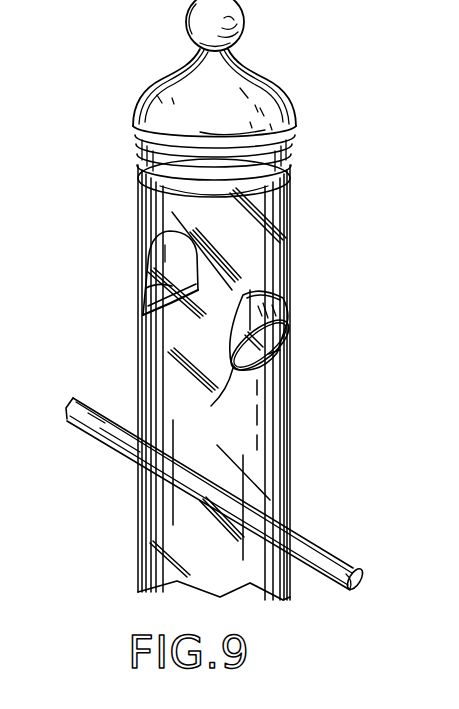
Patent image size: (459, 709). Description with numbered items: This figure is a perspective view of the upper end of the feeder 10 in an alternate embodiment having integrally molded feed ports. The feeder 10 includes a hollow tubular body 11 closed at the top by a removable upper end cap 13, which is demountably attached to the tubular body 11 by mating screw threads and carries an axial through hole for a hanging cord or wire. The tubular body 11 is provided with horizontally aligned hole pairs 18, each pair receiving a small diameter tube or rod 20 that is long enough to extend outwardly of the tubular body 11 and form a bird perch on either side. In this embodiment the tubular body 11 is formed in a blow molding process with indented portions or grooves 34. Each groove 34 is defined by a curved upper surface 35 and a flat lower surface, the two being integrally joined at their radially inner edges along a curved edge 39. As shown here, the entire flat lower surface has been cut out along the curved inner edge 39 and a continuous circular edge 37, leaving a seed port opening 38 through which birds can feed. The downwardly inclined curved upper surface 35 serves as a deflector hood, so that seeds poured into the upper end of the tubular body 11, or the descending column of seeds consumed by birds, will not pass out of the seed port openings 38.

The feeder 10 is at (262, 214).
The tubular body 11 is at (162, 524).
The upper end cap 13 is at (258, 102).
The hole pairs 18 is at (283, 521).
The tube or rod 20 is at (333, 561).
The groove 34 is at (137, 285).
The curved upper surface 35 is at (268, 300).
The continuous circular edge 37 is at (232, 416).
The seed port opening 38 is at (274, 358).
The curved edge 39 is at (262, 350).